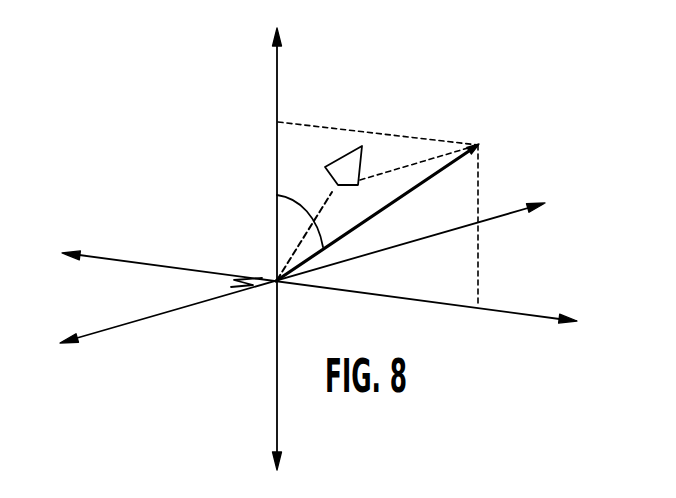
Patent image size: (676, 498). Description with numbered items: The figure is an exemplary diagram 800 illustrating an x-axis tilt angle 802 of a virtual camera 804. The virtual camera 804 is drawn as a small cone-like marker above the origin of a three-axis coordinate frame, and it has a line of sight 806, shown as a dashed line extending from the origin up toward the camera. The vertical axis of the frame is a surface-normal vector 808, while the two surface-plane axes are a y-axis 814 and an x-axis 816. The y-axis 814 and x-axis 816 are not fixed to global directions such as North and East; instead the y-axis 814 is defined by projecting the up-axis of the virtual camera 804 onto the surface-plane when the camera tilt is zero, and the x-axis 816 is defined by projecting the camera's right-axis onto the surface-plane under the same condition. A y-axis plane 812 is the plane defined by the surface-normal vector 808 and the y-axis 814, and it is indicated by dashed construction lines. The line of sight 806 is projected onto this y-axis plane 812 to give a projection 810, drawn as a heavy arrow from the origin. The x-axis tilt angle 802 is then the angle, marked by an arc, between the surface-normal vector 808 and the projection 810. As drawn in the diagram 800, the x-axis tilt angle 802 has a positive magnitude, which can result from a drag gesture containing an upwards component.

The diagram 800 is at (118, 115).
The x-axis tilt angle 802 is at (283, 207).
The virtual camera 804 is at (333, 172).
The line of sight 806 is at (330, 193).
The surface-normal vector 808 is at (278, 80).
The projection 810 is at (437, 177).
The y-axis plane 812 is at (393, 143).
The y-axis 814 is at (93, 253).
The x-axis 816 is at (517, 212).